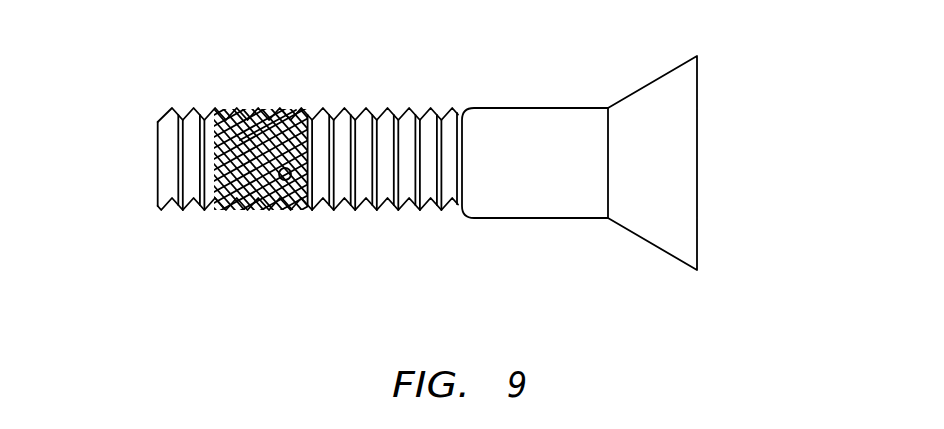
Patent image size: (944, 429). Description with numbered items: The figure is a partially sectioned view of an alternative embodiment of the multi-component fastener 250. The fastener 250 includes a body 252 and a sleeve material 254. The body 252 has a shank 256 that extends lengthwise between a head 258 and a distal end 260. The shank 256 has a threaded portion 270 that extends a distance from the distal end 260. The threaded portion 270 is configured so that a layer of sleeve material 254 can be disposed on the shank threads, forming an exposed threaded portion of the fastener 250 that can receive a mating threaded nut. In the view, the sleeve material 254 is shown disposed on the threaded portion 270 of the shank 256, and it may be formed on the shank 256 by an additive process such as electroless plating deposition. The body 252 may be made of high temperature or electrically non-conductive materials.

The multi-component fastener 250 is at (755, 175).
The body 252 is at (543, 230).
The sleeve material 254 is at (250, 222).
The shank 256 is at (275, 132).
The head 258 is at (688, 108).
The distal end 260 is at (157, 165).
The threaded portion 270 is at (288, 181).